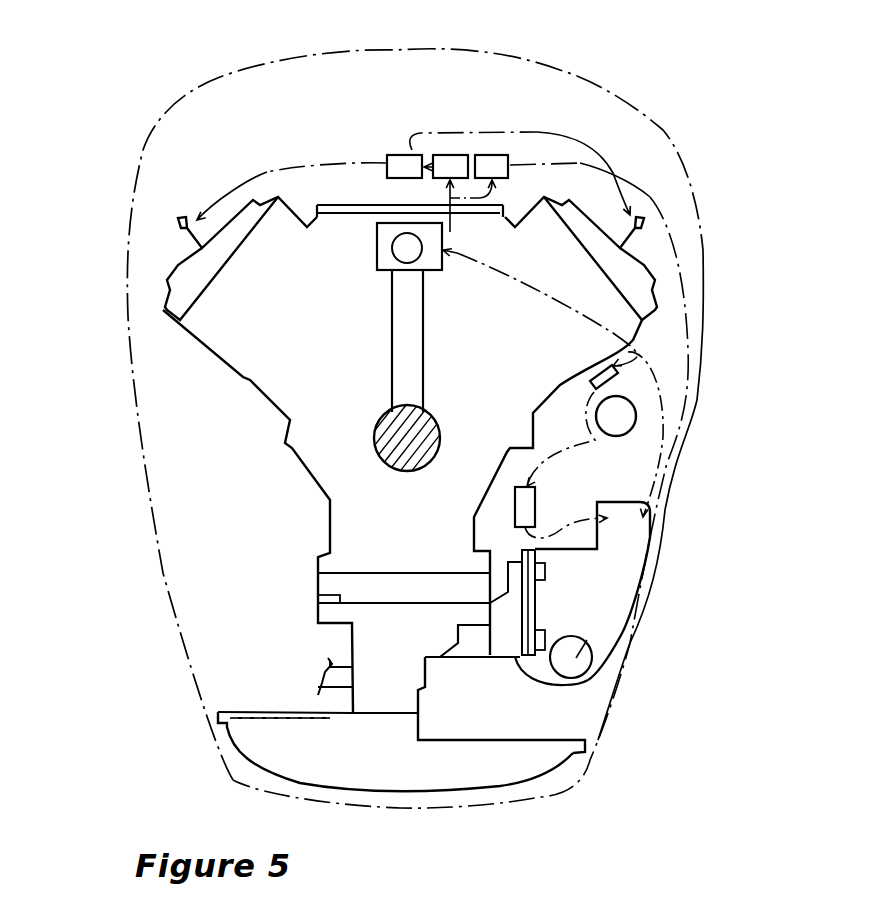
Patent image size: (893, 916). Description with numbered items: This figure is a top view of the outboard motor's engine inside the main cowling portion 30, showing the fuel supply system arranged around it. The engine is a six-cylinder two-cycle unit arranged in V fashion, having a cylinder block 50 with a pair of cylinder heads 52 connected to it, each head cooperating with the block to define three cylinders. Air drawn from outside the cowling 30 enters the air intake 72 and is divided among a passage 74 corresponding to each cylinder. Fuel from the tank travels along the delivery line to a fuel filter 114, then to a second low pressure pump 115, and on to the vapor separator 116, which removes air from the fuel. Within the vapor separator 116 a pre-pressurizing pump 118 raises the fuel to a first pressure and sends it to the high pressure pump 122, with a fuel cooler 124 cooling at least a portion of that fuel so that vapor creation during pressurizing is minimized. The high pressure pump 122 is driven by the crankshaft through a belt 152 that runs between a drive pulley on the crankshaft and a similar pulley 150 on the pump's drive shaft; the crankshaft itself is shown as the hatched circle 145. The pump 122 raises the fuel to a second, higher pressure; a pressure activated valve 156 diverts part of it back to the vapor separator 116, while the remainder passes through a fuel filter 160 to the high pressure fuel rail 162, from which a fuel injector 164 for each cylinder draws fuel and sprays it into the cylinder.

The main cowling portion 30 is at (590, 80).
The cylinder block 50 is at (312, 477).
The cylinder head 52 is at (247, 378).
The air intake 72 is at (413, 770).
The passage 74 is at (420, 672).
The fuel filter 114 is at (637, 440).
The second low pressure pump 115 is at (517, 493).
The vapor separator 116 is at (650, 537).
The pre-pressurizing pump 118 is at (580, 668).
The high pressure pump 122 is at (403, 245).
The fuel cooler 124 is at (620, 397).
The crankshaft 145 is at (401, 474).
The pulley 150 is at (377, 249).
The belt 152 is at (423, 327).
The pressure activated valve 156 is at (490, 155).
The fuel filter 160 is at (455, 155).
The high pressure fuel rail 162 is at (397, 155).
The fuel injector 164 is at (195, 222).